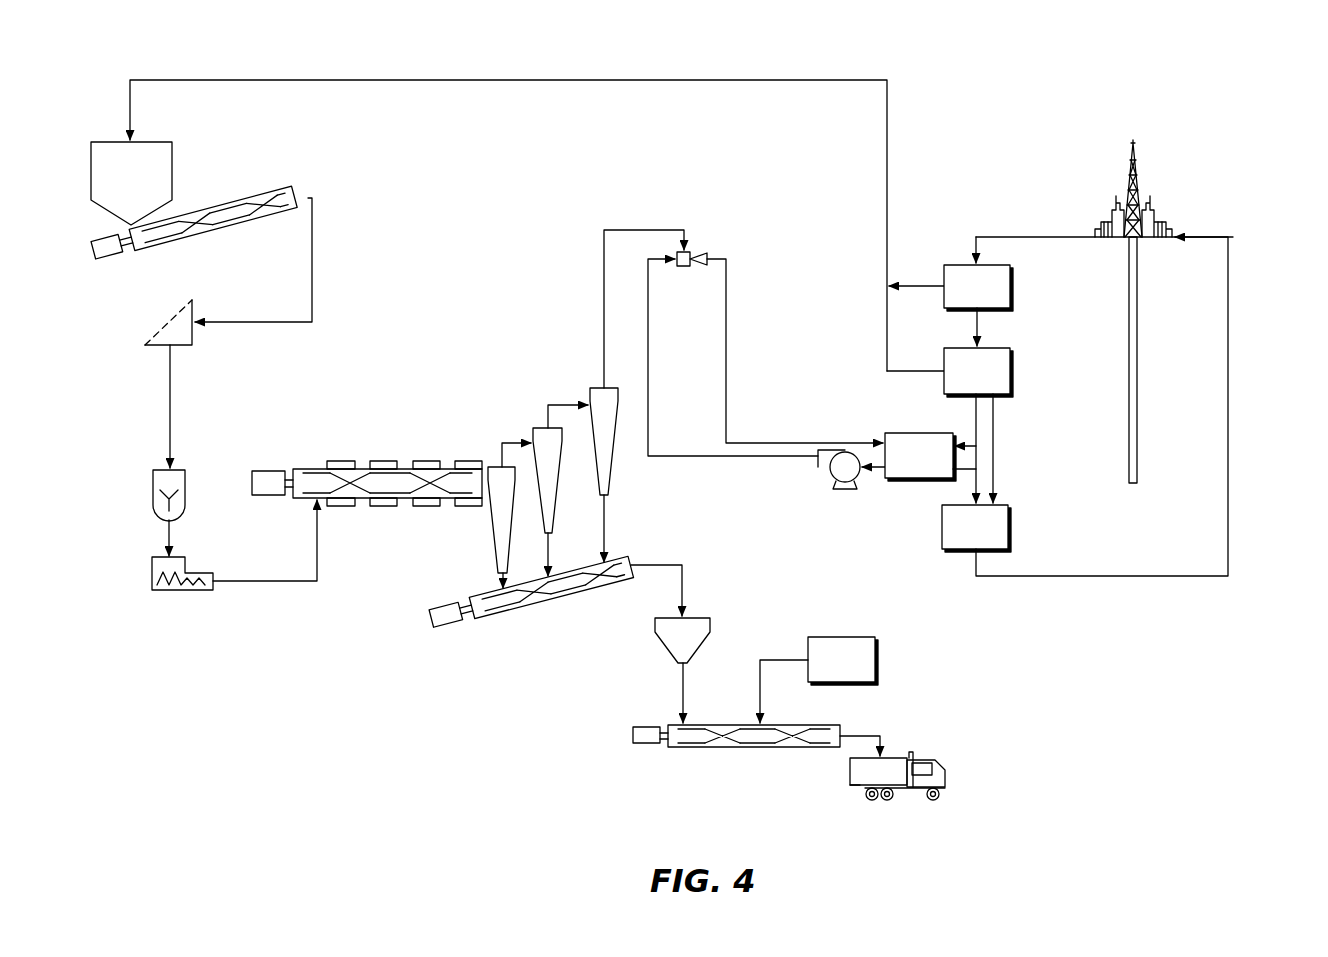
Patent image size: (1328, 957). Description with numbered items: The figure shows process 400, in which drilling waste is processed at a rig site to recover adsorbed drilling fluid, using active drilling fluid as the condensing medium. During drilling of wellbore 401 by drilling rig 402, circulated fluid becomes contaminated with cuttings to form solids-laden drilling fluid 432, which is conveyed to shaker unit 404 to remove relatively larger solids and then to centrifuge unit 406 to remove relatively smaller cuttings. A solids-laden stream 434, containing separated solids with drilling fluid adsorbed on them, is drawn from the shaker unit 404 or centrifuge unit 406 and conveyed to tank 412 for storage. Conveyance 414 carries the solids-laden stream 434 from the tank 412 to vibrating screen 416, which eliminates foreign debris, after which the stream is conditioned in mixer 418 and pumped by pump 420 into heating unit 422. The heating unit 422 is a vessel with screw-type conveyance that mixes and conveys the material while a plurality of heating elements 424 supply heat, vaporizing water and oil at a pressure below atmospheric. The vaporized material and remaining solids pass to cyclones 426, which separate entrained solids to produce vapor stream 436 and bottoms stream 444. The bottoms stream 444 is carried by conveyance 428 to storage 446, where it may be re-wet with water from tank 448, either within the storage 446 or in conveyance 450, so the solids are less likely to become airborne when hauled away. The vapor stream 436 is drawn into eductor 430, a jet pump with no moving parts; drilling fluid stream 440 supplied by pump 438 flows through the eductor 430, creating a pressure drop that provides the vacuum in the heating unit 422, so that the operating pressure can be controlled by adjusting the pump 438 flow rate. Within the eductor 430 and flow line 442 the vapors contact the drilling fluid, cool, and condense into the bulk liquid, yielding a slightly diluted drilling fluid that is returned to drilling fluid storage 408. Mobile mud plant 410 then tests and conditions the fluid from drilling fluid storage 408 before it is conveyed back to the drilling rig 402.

The process 400 is at (1220, 68).
The wellbore 401 is at (1129, 357).
The drilling rig 402 is at (1138, 165).
The shaker unit 404 is at (998, 299).
The centrifuge unit 406 is at (998, 384).
The drilling fluid storage 408 is at (940, 468).
The mobile mud plant 410 is at (997, 540).
The tank 412 is at (152, 190).
The conveyance 414 is at (290, 192).
The vibrating screen 416 is at (185, 348).
The mixer 418 is at (183, 470).
The pump 420 is at (197, 572).
The heating unit 422 is at (305, 468).
The heating elements 424 is at (386, 461).
The cyclones 426 is at (492, 534).
The conveyance 428 is at (517, 608).
The eductor 430 is at (690, 252).
The solids-laden drilling fluid 432 is at (1032, 237).
The solids-laden stream 434 is at (510, 80).
The vapor stream 436 is at (512, 442).
The pump 438 is at (840, 483).
The drilling fluid stream 440 is at (760, 457).
The flow line 442 is at (726, 352).
The bottoms stream 444 is at (655, 564).
The storage 446 is at (695, 618).
The tank 448 is at (863, 672).
The conveyance 450 is at (755, 748).